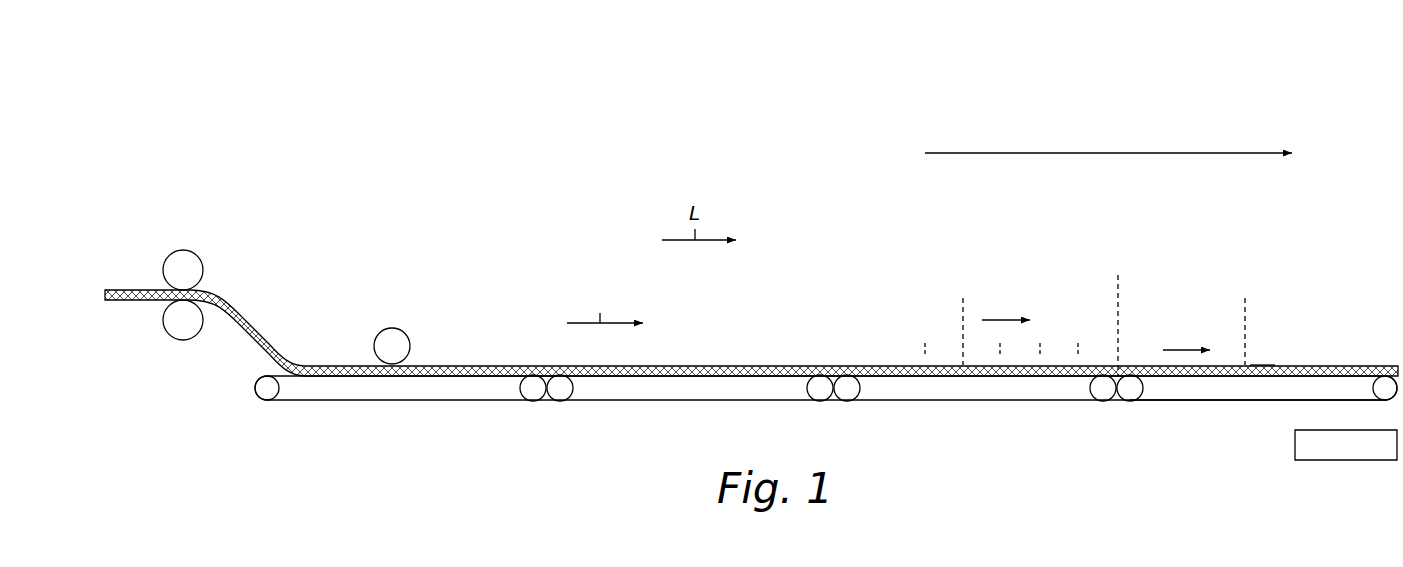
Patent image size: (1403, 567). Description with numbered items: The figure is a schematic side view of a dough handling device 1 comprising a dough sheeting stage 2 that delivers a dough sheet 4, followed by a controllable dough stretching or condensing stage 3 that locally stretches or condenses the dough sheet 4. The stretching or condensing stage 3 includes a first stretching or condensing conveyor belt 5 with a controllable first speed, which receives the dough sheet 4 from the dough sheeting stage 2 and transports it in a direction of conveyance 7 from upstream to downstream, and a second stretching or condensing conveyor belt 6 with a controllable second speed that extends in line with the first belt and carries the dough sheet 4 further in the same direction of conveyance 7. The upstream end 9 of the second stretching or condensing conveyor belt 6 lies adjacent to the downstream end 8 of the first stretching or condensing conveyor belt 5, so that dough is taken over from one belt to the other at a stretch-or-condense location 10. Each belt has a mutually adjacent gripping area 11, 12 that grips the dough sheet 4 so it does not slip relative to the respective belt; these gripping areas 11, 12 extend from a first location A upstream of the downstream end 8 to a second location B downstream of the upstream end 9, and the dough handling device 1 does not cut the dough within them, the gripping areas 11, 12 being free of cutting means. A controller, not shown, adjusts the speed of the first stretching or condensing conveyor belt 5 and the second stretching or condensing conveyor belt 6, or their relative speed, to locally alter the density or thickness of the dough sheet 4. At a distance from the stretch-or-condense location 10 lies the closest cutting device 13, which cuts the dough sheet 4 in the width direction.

The dough handling device 1 is at (1313, 92).
The dough sheeting stage 2 is at (432, 217).
The dough stretching or condensing stage 3 is at (1398, 210).
The dough sheet 4 is at (345, 365).
The first stretching or condensing conveyor belt 5 is at (967, 392).
The second stretching or condensing conveyor belt 6 is at (1322, 387).
The direction of conveyance 7 is at (605, 304).
The downstream end of the first stretching or condensing conveyor belt 8 is at (1110, 357).
The upstream end of the second stretching or condensing conveyor belt 9 is at (1125, 357).
The stretch-or-condense location 10 is at (1115, 392).
The gripping area of the first conveyor belt 11 is at (1118, 275).
The gripping area of the second conveyor belt 12 is at (1247, 275).
The cutting device 13 is at (1262, 311).